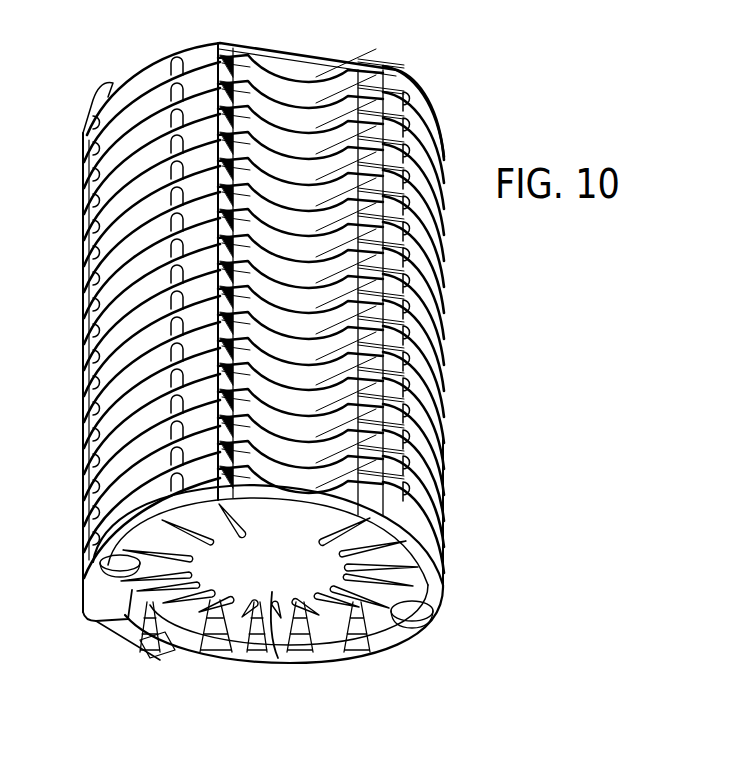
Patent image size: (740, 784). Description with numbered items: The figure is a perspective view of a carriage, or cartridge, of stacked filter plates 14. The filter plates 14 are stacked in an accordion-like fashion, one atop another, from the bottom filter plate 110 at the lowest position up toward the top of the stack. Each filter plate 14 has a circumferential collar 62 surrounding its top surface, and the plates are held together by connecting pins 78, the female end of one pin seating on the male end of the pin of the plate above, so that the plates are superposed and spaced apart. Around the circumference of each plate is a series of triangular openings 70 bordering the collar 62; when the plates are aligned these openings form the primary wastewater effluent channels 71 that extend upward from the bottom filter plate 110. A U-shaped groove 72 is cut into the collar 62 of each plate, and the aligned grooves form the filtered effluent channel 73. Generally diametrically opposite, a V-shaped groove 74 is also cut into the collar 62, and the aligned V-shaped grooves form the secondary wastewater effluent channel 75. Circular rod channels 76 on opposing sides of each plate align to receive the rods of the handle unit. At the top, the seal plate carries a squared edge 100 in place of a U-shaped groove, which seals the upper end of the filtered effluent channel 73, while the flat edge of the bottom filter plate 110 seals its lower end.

The squared edge 100 is at (302, 55).
The U-shaped groove 72 is at (430, 110).
The filtered effluent channel 73 is at (302, 269).
The collar 62 is at (432, 402).
The connecting pins 78 is at (412, 515).
The triangular openings 70 is at (420, 581).
The circular rod channels 76 is at (114, 565).
The V-shaped groove 74 is at (127, 632).
The secondary wastewater effluent channel 75 is at (157, 645).
The primary wastewater effluent channels 71 is at (262, 668).
The bottom filter plate 110 is at (270, 668).
The filter plate 14 is at (107, 477).